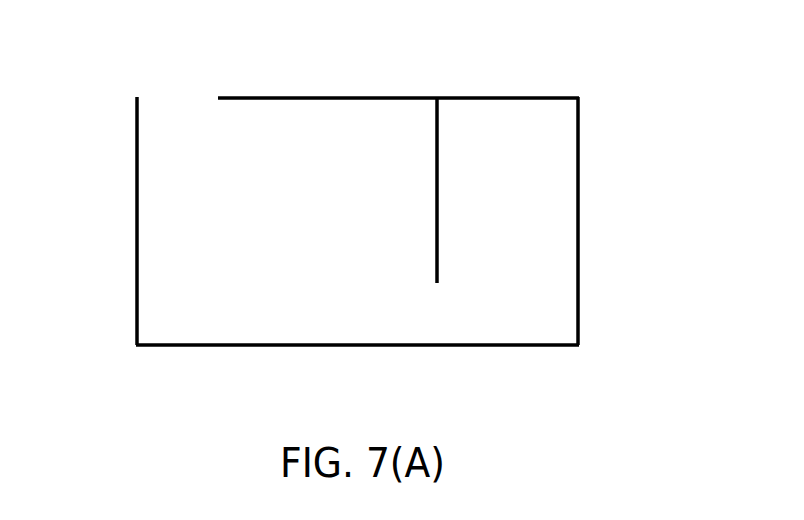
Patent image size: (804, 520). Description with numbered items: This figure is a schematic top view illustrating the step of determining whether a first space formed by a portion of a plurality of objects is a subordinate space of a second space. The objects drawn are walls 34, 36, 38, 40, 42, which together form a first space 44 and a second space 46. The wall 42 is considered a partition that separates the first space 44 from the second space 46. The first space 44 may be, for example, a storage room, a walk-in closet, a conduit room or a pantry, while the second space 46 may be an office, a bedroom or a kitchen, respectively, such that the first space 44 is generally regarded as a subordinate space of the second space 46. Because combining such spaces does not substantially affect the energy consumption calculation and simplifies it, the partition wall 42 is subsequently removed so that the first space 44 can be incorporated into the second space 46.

The wall 34 is at (136, 220).
The wall 36 is at (375, 346).
The wall 38 is at (578, 198).
The wall 40 is at (355, 97).
The wall 42 is at (438, 160).
The first space 44 is at (520, 175).
The second space 46 is at (248, 170).